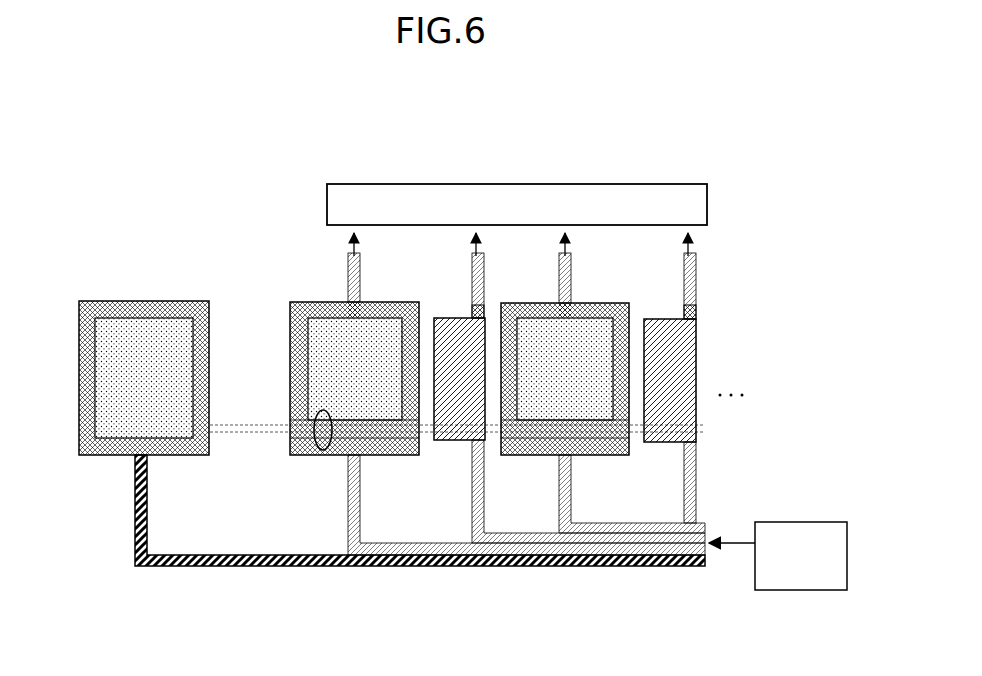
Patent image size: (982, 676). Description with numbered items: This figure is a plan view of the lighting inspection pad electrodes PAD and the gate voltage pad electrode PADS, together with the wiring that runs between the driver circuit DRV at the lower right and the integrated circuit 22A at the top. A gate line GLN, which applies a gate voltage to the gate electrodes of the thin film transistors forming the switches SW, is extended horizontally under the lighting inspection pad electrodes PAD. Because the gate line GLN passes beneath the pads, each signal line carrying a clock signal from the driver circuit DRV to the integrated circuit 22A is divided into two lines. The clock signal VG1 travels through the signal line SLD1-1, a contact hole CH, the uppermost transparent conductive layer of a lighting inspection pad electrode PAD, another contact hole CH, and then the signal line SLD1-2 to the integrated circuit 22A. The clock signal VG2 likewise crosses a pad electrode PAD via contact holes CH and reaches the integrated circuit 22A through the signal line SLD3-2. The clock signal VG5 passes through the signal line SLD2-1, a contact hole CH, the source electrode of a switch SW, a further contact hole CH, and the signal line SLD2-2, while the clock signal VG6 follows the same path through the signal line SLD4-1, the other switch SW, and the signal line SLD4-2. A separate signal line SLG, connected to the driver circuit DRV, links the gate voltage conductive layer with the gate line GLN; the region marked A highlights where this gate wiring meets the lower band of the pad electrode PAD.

The integrated circuit 22A is at (670, 180).
The gate voltage pad electrode PADS is at (104, 300).
The lighting inspection pad electrode PAD is at (313, 300).
The switch SW is at (699, 352).
The contact hole CH is at (384, 310).
The signal line SLD1-2 is at (344, 271).
The signal line SLD2-2 is at (470, 284).
The signal line SLD3-2 is at (556, 285).
The signal line SLD4-2 is at (679, 283).
The signal line SLD1-1 is at (346, 522).
The signal line SLD2-1 is at (473, 520).
The signal line SLD4-1 is at (573, 520).
The clock signal VG1 is at (340, 485).
The clock signal VG5 is at (464, 470).
The clock signal VG2 is at (550, 485).
The clock signal VG6 is at (677, 472).
The gate line GLN is at (232, 440).
The signal line SLG is at (190, 569).
The region A is at (316, 436).
The driver circuit DRV is at (797, 519).